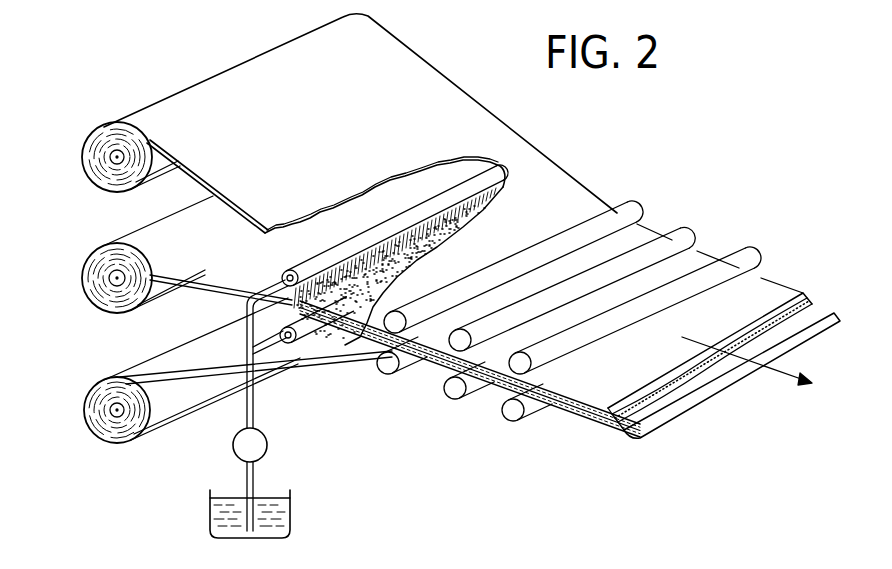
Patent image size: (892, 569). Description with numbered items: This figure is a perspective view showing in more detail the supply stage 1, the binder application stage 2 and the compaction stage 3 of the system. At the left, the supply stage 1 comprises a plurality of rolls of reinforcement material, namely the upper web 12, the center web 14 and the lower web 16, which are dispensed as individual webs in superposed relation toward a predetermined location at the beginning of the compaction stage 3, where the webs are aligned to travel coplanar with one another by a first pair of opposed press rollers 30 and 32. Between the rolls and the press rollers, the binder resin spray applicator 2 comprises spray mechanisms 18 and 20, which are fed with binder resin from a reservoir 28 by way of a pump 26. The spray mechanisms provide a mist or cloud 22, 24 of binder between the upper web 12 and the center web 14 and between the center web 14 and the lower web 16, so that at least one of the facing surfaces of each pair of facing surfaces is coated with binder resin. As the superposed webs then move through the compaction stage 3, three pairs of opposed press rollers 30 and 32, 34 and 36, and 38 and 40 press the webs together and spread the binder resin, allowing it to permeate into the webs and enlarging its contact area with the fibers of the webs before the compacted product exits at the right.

The supply stage 1 is at (178, 86).
The binder application stage 2 is at (527, 132).
The compaction stage 3 is at (713, 226).
The upper web roll 12 is at (88, 178).
The center web roll 14 is at (93, 299).
The lower web roll 16 is at (88, 396).
The spray mechanism 18 is at (314, 262).
The spray mechanism 20 is at (292, 347).
The mist or cloud 22 is at (377, 252).
The mist or cloud 24 is at (247, 311).
The pump 26 is at (268, 448).
The reservoir 28 is at (291, 512).
The press roller 30 is at (626, 205).
The press roller 32 is at (394, 373).
The press roller 34 is at (680, 228).
The press roller 36 is at (458, 398).
The press roller 38 is at (742, 250).
The press roller 40 is at (516, 418).